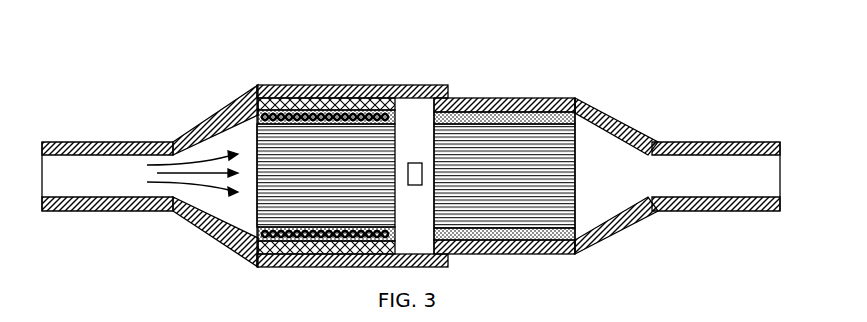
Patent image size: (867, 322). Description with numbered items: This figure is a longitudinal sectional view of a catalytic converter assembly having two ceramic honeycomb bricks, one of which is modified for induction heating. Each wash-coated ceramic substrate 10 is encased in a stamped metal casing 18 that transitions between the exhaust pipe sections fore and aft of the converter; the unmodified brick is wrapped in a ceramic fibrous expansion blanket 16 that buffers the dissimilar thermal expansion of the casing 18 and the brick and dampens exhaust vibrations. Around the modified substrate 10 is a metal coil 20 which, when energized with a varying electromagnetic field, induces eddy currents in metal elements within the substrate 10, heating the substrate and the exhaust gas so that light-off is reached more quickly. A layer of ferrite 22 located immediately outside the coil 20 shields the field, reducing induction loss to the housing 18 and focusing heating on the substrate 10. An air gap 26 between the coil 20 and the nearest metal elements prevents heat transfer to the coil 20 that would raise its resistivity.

The ceramic honeycomb substrate 10 is at (300, 198).
The ceramic fibrous expansion blanket 16 is at (505, 113).
The metal casing 18 is at (416, 145).
The induction coil 20 is at (312, 99).
The ferrite shielding layer 22 is at (357, 108).
The air gap 26 is at (244, 121).